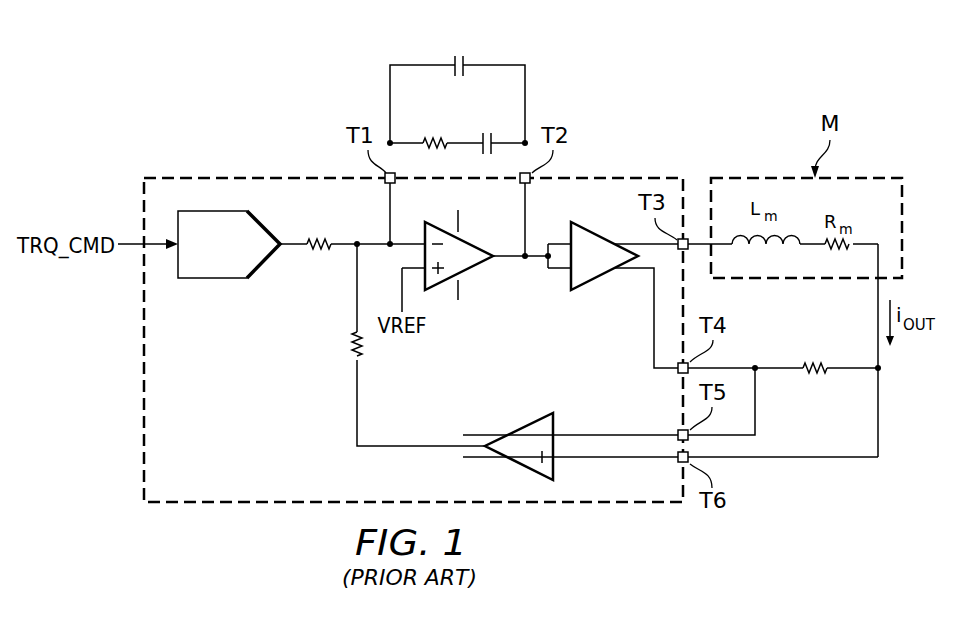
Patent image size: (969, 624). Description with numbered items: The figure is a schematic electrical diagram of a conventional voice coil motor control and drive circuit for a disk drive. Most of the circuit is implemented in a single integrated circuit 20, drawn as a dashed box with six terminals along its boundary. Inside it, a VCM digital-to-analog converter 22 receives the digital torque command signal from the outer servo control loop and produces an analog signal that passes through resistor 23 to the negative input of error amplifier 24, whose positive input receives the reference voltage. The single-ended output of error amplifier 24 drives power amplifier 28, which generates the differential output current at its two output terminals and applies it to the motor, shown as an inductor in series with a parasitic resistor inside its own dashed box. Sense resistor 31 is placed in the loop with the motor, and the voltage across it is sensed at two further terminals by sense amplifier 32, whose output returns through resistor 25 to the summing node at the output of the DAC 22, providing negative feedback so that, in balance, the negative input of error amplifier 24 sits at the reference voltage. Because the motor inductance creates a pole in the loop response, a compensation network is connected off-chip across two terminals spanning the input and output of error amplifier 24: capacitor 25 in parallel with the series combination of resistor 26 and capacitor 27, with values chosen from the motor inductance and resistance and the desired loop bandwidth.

The integrated circuit 20 is at (232, 172).
The VCM digital-to-analog converter 22 is at (215, 279).
The resistor 23 is at (316, 240).
The error amplifier 24 is at (478, 264).
The resistor / compensation capacitor 25 is at (458, 55).
The resistor 26 is at (438, 138).
The capacitor 27 is at (485, 130).
The power amplifier 28 is at (592, 280).
The sense resistor 31 is at (820, 362).
The sense amplifier 32 is at (530, 424).